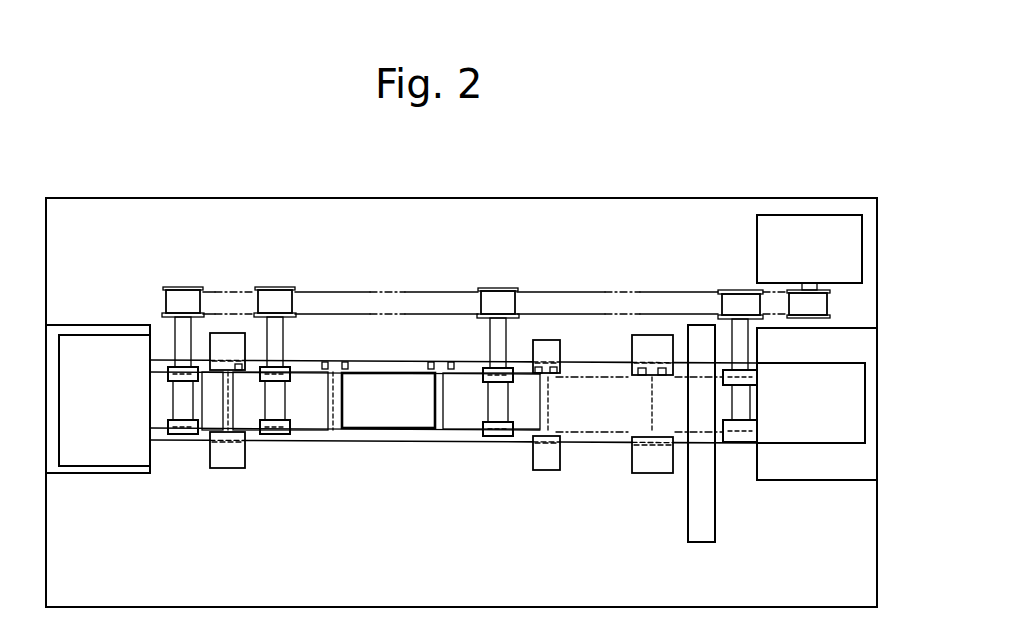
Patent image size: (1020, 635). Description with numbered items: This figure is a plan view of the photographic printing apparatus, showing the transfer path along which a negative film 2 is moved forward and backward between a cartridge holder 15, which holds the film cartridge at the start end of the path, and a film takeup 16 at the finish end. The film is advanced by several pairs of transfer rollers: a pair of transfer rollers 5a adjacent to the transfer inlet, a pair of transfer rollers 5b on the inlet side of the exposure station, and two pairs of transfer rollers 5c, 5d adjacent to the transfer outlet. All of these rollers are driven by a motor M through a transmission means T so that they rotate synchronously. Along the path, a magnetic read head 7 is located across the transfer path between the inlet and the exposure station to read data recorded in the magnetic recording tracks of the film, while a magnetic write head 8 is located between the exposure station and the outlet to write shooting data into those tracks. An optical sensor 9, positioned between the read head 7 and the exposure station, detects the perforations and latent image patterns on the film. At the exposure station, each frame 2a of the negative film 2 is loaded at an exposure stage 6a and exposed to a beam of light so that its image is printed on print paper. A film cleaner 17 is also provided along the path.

The negative film 2 is at (413, 365).
The frame 2a is at (300, 378).
The transfer rollers 5a is at (747, 442).
The transfer rollers 5b is at (497, 440).
The transfer rollers 5c is at (282, 434).
The transfer rollers 5d is at (188, 434).
The exposure stage 6a is at (387, 417).
The magnetic read head 7 is at (655, 342).
The magnetic write head 8 is at (225, 337).
The optical sensor 9 is at (550, 343).
The cartridge holder 15 is at (813, 473).
The film takeup 16 is at (85, 355).
The film cleaner 17 is at (700, 533).
The transmission means T is at (622, 295).
The motor M is at (837, 228).